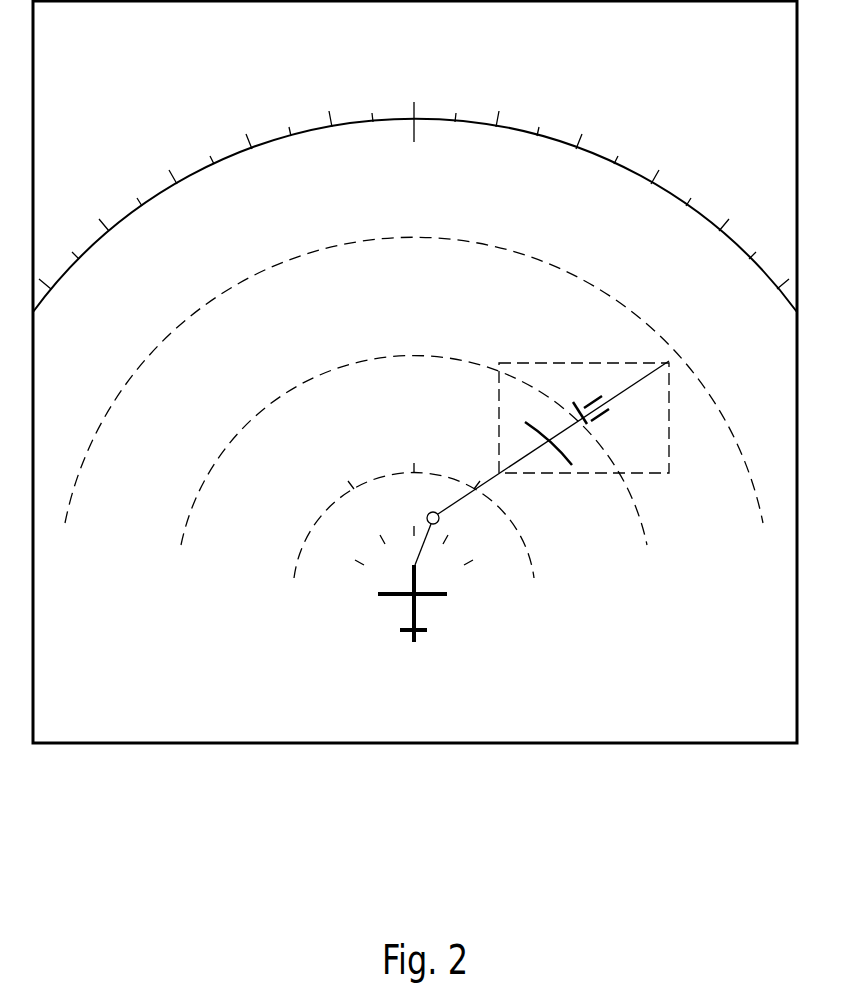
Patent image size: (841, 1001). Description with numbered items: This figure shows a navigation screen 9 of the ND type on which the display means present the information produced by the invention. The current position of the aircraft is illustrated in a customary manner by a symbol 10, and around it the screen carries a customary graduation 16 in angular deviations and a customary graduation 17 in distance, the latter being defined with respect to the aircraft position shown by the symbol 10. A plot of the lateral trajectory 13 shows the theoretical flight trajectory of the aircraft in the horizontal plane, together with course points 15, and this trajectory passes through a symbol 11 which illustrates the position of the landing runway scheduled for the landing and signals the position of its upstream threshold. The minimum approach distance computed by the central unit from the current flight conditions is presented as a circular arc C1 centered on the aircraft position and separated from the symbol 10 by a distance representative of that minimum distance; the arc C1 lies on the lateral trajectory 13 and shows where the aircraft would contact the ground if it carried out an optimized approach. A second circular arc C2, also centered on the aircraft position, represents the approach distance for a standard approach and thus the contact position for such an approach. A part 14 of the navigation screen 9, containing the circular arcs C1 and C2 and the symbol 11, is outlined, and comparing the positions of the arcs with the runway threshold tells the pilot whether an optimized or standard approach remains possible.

The navigation screen 9 is at (416, 745).
The symbol 10 is at (418, 607).
The symbol 11 is at (596, 397).
The lateral trajectory 13 is at (493, 480).
The part of the navigation screen 14 is at (645, 475).
The course points 15 is at (426, 519).
The graduation in angular deviations 16 is at (166, 129).
The graduation in distance 17 is at (152, 368).
The circular arc C1 is at (528, 430).
The circular arc C2 is at (571, 395).